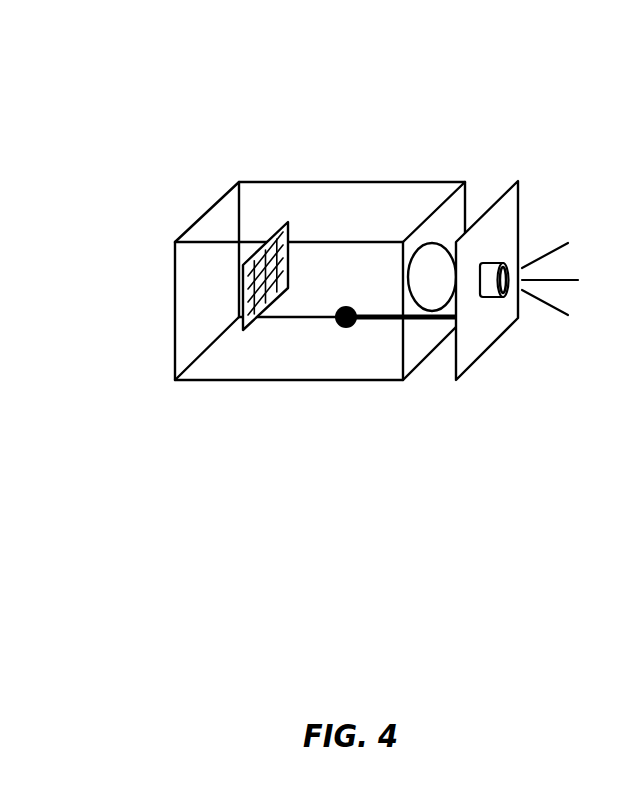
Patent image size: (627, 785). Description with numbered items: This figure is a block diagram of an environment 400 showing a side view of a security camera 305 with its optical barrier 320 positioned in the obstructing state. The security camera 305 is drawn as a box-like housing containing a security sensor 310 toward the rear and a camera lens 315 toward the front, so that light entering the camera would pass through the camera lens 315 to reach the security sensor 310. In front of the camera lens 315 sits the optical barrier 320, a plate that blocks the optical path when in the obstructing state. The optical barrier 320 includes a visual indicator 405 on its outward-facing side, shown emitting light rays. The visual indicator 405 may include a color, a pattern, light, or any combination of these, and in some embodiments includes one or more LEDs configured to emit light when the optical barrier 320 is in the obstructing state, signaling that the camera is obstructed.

The environment 400 is at (90, 103).
The security camera 305 is at (235, 380).
The security sensor 310 is at (253, 325).
The camera lens 315 is at (418, 242).
The optical barrier 320 is at (510, 187).
The visual indicator 405 is at (535, 244).